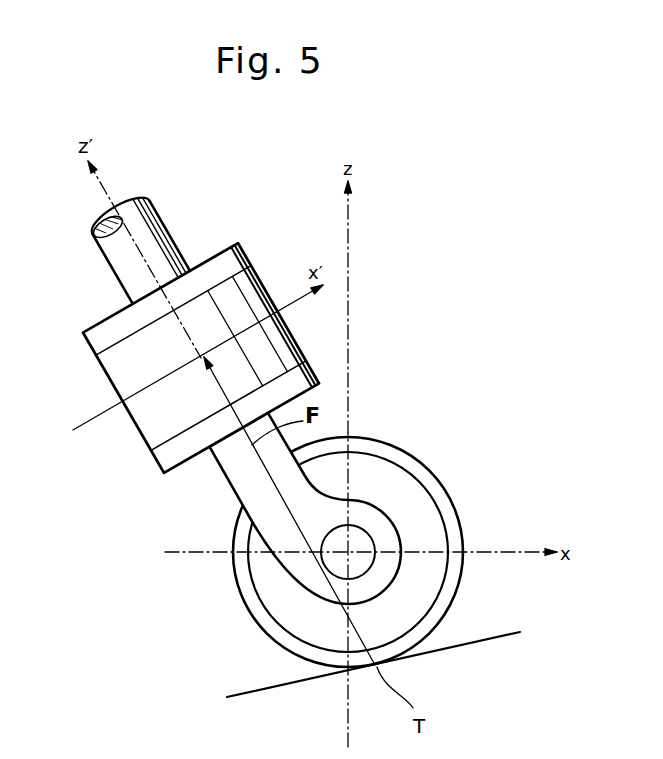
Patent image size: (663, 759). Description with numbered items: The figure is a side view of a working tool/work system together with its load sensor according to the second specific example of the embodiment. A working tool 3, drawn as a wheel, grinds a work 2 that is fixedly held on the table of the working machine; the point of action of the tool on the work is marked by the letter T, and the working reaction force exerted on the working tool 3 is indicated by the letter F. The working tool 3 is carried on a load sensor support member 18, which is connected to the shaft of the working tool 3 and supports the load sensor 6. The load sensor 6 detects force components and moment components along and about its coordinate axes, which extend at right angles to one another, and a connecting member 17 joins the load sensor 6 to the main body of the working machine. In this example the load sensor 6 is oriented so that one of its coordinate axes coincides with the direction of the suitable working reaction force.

The work 2 is at (272, 703).
The working tool 3 is at (273, 582).
The load sensor 6 is at (125, 370).
The connecting member 17 is at (127, 278).
The load sensor support member 18 is at (233, 488).